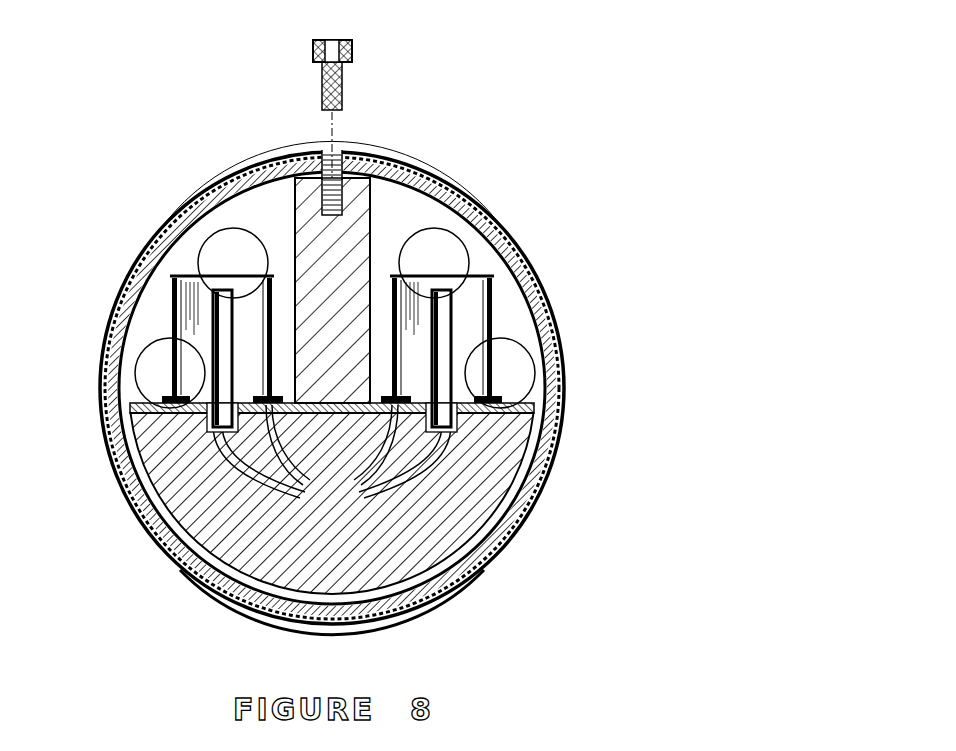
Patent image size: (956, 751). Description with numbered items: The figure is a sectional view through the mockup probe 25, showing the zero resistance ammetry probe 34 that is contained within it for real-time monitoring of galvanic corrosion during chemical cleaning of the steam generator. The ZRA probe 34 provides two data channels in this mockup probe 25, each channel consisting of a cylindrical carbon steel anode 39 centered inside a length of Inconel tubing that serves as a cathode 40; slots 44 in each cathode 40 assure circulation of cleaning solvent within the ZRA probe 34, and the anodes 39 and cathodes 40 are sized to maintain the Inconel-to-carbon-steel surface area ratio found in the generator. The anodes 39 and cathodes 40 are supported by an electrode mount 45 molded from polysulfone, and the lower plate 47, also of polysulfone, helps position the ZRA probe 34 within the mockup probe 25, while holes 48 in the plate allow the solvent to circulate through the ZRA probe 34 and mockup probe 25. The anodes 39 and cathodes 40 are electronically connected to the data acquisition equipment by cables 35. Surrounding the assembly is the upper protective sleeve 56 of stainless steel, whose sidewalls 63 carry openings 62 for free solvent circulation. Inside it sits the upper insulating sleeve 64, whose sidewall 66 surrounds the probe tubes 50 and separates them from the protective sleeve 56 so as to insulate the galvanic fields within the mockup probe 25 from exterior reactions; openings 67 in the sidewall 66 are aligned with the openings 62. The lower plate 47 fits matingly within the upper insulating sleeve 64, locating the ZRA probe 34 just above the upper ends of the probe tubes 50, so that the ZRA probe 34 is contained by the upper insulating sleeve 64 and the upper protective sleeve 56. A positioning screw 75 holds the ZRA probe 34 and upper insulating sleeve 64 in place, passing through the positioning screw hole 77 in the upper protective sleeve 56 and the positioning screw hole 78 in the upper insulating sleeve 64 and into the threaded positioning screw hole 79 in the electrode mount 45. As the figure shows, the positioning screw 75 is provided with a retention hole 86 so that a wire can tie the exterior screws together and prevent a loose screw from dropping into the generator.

The mockup probe 25 is at (626, 426).
The zero resistance ammetry (ZRA) probe 34 is at (632, 426).
The cables 35 is at (188, 572).
The anode 39 is at (213, 330).
The cathode 40 is at (172, 340).
The slots 44 is at (175, 312).
The electrode mount 45 is at (487, 470).
The lower plate 47 is at (268, 195).
The holes 48 is at (247, 268).
The probe tubes 50 is at (203, 270).
The upper protective sleeve 56 is at (407, 162).
The openings 62 is at (527, 258).
The sidewalls 63 is at (443, 182).
The upper insulating sleeve 64 is at (468, 202).
The sidewall 66 is at (493, 222).
The openings 67 is at (543, 284).
The positioning screw 75 is at (322, 90).
The positioning screw hole 77 is at (320, 150).
The positioning screw hole 78 is at (327, 150).
The threaded positioning screw hole 79 is at (338, 150).
The retention hole 86 is at (313, 48).